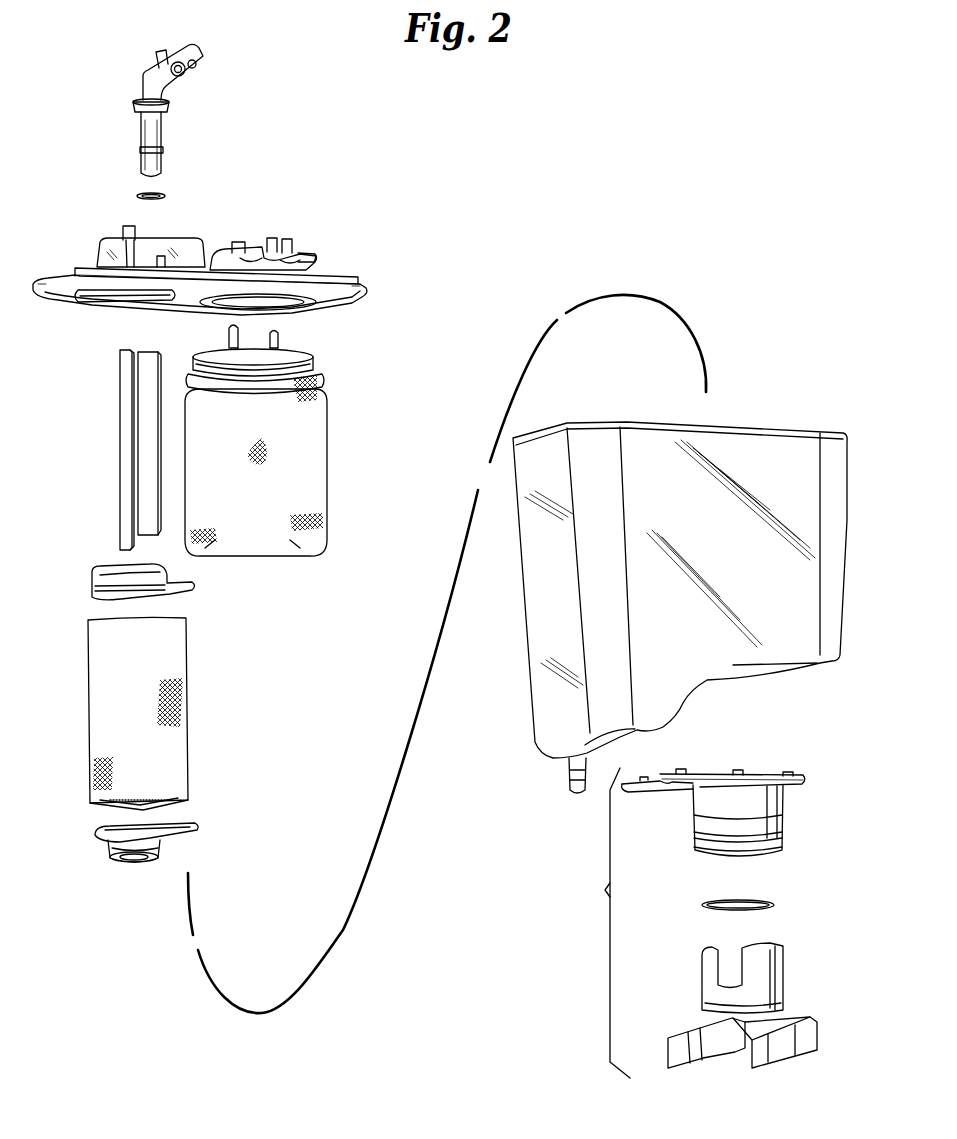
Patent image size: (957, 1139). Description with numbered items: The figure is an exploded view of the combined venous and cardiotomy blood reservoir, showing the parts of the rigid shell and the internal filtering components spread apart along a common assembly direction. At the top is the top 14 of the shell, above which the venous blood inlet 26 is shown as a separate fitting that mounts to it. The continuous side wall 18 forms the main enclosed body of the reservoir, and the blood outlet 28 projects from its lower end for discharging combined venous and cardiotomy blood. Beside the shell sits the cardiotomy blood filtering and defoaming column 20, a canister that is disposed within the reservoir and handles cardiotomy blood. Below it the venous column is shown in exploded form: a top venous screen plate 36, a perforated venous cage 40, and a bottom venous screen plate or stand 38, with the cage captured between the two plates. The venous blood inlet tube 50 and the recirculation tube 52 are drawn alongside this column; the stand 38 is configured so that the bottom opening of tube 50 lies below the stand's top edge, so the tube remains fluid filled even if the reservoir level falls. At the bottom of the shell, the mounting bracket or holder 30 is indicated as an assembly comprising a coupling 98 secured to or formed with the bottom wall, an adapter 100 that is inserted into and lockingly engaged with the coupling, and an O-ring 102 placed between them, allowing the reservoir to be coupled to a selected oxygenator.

The top 14 is at (360, 279).
The continuous side wall 18 is at (852, 564).
The cardiotomy blood filtering and defoaming column 20 is at (345, 446).
The venous blood inlet 26 is at (186, 92).
The blood outlet 28 is at (575, 797).
The mounting bracket or holder 30 is at (604, 890).
The top venous screen plate 36 is at (195, 587).
The bottom venous screen plate or stand 38 is at (197, 828).
The perforated venous cage 40 is at (175, 773).
The venous blood inlet tube 50 is at (150, 356).
The recirculation tube 52 is at (118, 398).
The coupling 98 is at (796, 808).
The adapter 100 is at (797, 969).
The O-ring 102 is at (778, 902).